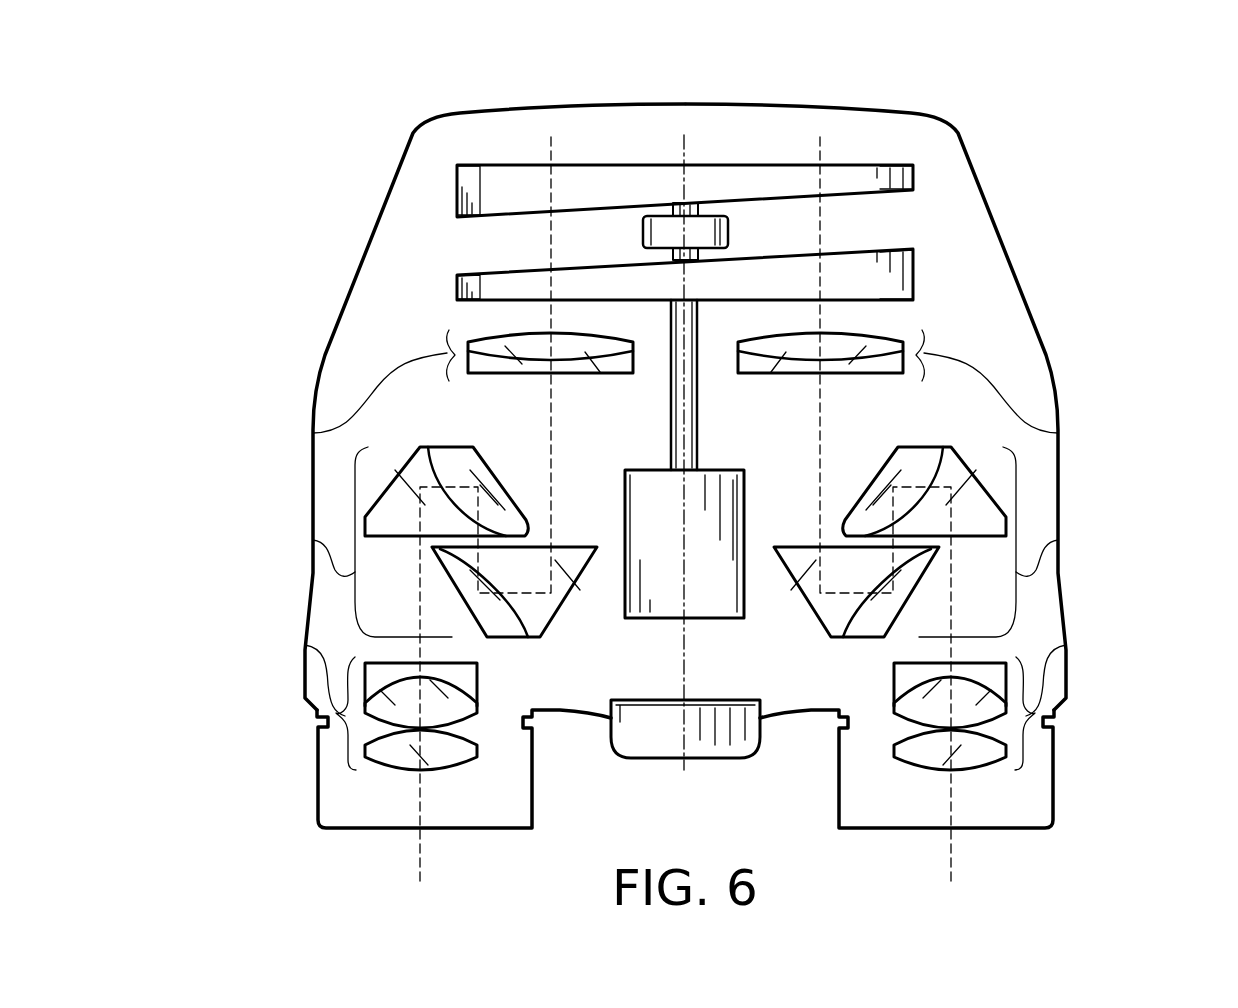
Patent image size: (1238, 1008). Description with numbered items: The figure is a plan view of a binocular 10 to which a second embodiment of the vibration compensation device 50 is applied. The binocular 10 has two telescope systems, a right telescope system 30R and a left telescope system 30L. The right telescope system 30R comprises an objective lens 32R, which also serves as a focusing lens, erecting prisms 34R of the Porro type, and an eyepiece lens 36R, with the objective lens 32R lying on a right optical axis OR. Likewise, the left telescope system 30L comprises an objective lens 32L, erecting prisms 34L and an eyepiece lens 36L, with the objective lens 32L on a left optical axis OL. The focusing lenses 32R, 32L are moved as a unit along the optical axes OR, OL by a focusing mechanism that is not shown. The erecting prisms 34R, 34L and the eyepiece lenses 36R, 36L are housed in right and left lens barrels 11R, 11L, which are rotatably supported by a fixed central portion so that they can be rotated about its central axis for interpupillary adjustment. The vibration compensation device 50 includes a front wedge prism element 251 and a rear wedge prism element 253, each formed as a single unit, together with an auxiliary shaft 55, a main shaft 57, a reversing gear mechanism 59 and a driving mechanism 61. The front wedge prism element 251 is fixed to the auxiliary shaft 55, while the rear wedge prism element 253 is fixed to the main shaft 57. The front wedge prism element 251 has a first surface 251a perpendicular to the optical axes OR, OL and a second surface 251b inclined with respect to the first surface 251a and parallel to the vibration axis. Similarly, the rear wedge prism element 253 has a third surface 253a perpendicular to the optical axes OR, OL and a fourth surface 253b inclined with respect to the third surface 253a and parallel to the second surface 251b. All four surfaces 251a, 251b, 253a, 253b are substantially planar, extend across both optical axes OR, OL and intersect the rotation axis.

The binocular 10 is at (777, 84).
The left lens barrel 11L is at (328, 808).
The right lens barrel 11R is at (1043, 807).
The left telescope system 30L is at (392, 551).
The right telescope system 30R is at (979, 551).
The left objective lens 32L is at (313, 433).
The right objective lens 32R is at (1058, 433).
The left erecting prisms 34L is at (313, 540).
The right erecting prisms 34R is at (1058, 540).
The left eyepiece lens 36L is at (358, 700).
The right eyepiece lens 36R is at (1016, 700).
The left optical axis OL is at (548, 438).
The right optical axis OR is at (822, 440).
The vibration compensation device 50 is at (658, 414).
The front wedge prism element 251 is at (627, 177).
The first surface 251a is at (880, 150).
The second surface 251b is at (510, 218).
The rear wedge prism element 253 is at (793, 270).
The third surface 253a is at (467, 300).
The fourth surface 253b is at (850, 247).
The auxiliary shaft 55 is at (702, 207).
The main shaft 57 is at (671, 440).
The reversing gear mechanism 59 is at (643, 232).
The driving mechanism 61 is at (703, 607).